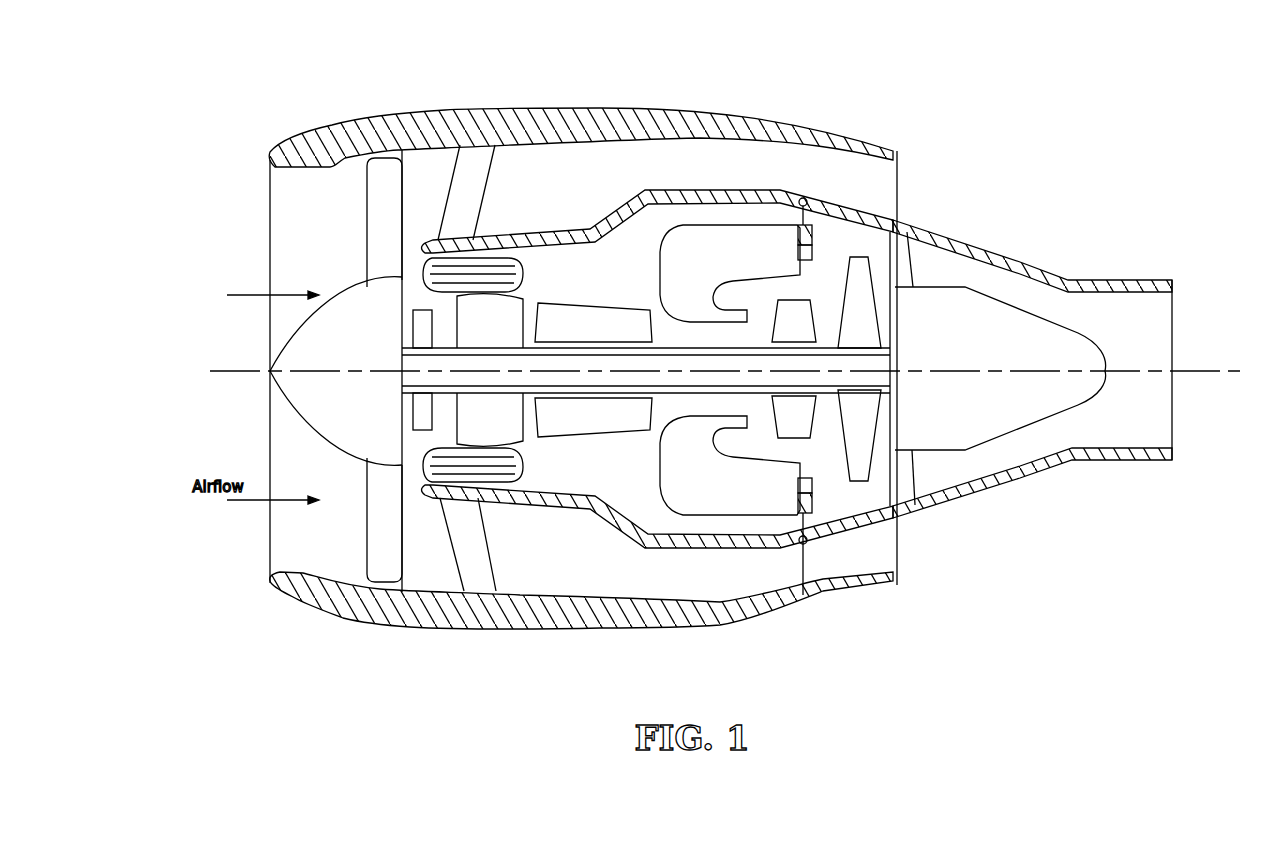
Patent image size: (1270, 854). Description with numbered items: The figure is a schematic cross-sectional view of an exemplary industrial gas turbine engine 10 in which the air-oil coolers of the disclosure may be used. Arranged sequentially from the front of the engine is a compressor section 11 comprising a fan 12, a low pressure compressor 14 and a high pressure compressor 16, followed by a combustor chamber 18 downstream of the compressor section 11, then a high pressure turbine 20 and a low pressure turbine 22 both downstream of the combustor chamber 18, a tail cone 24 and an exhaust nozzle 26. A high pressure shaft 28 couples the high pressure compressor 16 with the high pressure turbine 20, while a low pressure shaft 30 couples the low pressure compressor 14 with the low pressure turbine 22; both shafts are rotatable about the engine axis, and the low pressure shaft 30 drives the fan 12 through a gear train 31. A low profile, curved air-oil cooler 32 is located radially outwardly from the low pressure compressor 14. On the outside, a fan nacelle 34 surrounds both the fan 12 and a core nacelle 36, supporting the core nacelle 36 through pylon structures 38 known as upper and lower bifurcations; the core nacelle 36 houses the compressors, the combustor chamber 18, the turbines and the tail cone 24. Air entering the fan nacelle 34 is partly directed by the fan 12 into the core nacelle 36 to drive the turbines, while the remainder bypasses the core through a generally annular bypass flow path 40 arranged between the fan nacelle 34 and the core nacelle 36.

The gas turbine engine 10 is at (224, 131).
The compressor section 11 is at (433, 175).
The fan 12 is at (393, 250).
The low pressure compressor 14 is at (497, 407).
The high pressure compressor 16 is at (573, 330).
The combustor chamber 18 is at (725, 243).
The high pressure turbine 20 is at (801, 313).
The low pressure turbine 22 is at (858, 303).
The tail cone 24 is at (1047, 333).
The exhaust nozzle 26 is at (1000, 278).
The high pressure shaft 28 is at (693, 343).
The low pressure shaft 30 is at (648, 348).
The gear train 31 is at (402, 320).
The air-oil cooler 32 is at (523, 274).
The fan nacelle 34 is at (512, 120).
The core nacelle 36 is at (604, 203).
The pylon structures 38 is at (474, 163).
The bypass flow path 40 is at (676, 587).